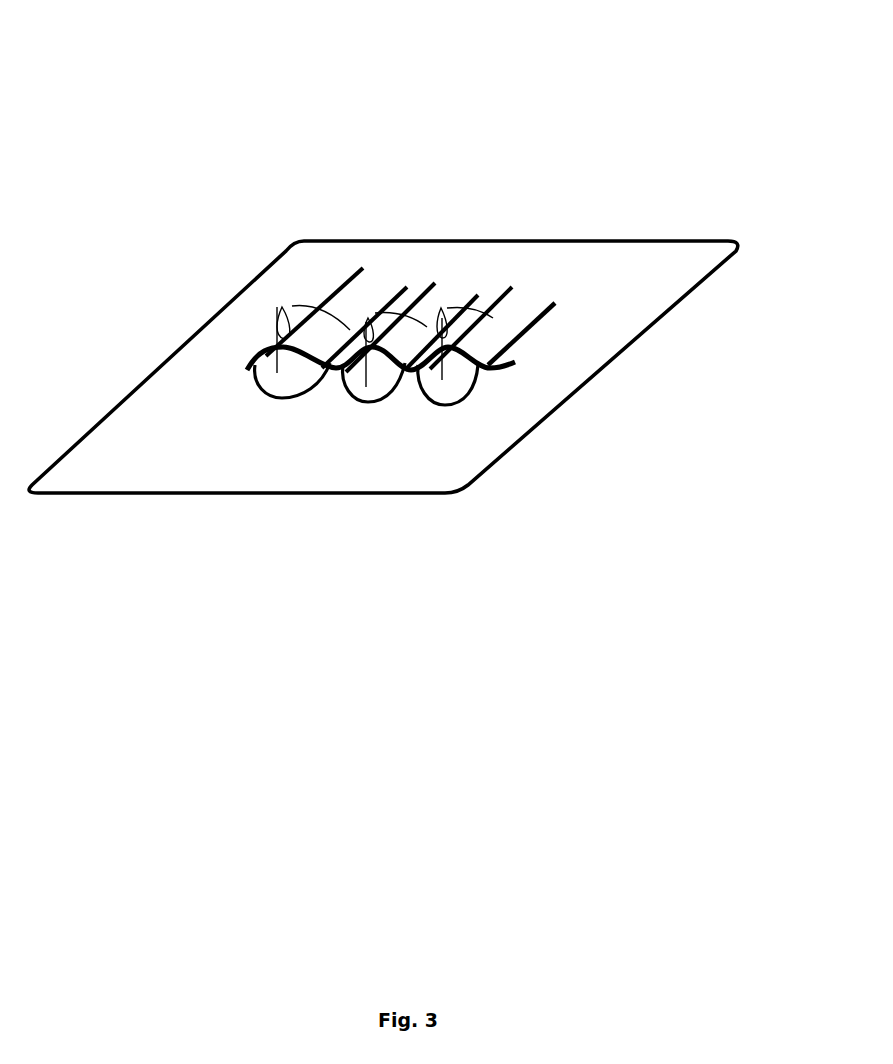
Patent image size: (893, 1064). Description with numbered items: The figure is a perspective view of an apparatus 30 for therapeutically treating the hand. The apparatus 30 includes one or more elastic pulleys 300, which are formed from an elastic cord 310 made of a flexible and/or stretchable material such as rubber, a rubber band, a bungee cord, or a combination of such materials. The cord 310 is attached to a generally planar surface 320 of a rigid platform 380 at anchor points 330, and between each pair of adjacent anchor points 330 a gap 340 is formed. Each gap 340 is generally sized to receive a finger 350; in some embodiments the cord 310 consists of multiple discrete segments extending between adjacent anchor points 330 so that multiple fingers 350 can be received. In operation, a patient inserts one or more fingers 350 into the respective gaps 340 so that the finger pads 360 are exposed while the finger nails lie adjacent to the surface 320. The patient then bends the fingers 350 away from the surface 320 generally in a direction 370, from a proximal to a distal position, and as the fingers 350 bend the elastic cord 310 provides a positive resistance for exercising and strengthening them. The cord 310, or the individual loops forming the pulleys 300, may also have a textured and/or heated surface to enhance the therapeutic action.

The apparatus 30 is at (273, 94).
The elastic pulleys 300 is at (402, 404).
The elastic cord 310 is at (250, 374).
The generally planar surface 320 is at (642, 332).
The anchor points 330 is at (508, 367).
The gap 340 is at (473, 404).
The finger 350 is at (532, 291).
The finger pad 360 is at (270, 404).
The direction 370 is at (266, 302).
The rigid platform 380 is at (520, 207).